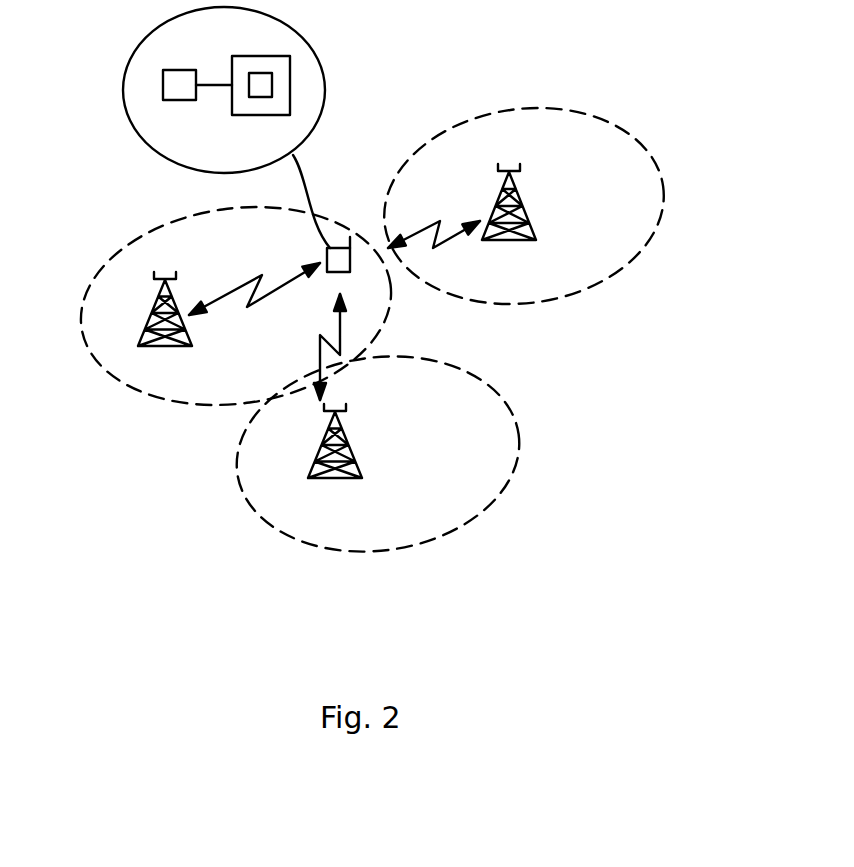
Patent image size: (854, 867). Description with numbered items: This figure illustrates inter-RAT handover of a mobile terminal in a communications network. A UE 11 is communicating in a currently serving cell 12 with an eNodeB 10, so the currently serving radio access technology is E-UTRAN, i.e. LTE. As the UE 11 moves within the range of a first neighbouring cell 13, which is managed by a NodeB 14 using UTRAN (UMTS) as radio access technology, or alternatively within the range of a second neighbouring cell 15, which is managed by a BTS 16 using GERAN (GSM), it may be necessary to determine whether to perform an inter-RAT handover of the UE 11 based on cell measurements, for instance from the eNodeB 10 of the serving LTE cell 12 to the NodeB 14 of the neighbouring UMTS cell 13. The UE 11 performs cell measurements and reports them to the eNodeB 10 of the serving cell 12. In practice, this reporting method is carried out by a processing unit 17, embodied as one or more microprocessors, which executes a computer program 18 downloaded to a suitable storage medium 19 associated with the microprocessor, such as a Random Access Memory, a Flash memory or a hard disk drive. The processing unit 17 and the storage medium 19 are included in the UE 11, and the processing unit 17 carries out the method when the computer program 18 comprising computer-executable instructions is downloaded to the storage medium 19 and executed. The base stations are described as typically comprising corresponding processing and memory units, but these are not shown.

The eNodeB 10 is at (152, 312).
The UE 11 is at (358, 246).
The currently serving cell 12 is at (90, 333).
The first neighbouring cell 13 is at (462, 495).
The NodeB 14 is at (353, 438).
The second neighbouring cell 15 is at (640, 216).
The BTS 16 is at (528, 186).
The processing unit 17 is at (163, 88).
The computer program 18 is at (262, 82).
The storage medium 19 is at (242, 108).